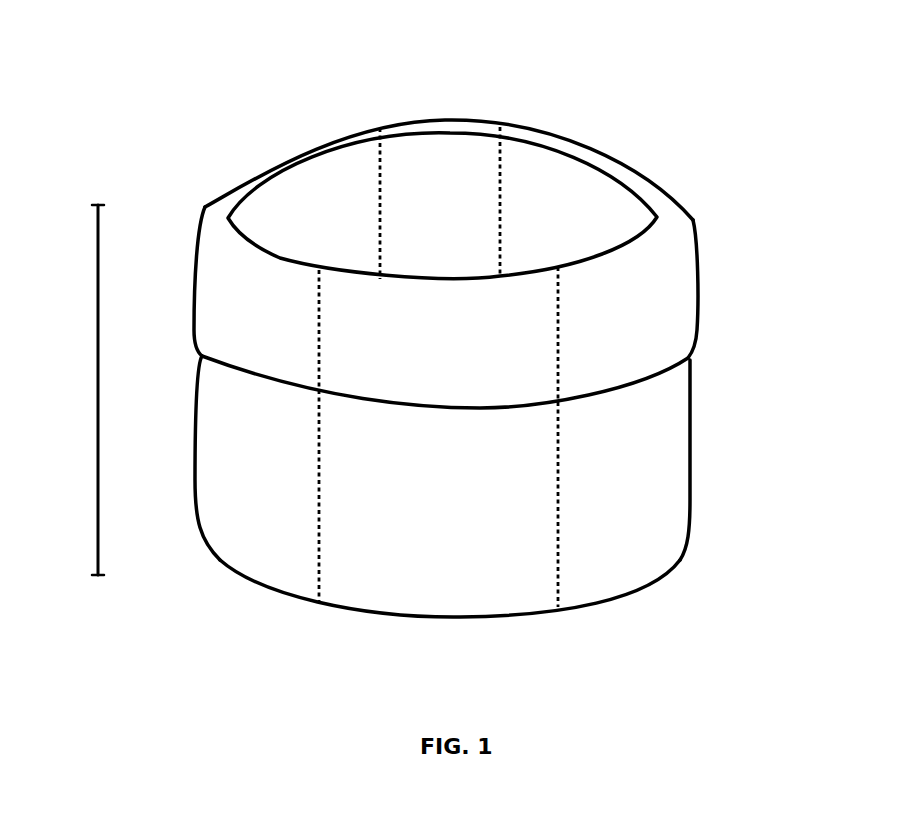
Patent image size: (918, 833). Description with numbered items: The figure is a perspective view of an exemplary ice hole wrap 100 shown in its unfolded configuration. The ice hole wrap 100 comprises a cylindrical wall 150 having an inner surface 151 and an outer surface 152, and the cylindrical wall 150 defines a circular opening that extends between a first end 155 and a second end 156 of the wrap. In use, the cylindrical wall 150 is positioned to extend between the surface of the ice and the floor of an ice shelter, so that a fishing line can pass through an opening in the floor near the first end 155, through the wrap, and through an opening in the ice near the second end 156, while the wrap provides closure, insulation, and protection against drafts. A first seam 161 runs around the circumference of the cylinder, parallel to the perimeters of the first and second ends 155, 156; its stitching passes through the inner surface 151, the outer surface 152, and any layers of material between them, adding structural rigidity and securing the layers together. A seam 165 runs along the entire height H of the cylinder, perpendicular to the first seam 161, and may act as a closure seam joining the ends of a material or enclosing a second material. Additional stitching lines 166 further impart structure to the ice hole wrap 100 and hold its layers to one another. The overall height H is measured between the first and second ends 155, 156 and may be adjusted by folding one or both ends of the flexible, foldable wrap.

The ice hole wrap 100 is at (250, 62).
The cylindrical wall 150 is at (454, 203).
The inner surface 151 is at (258, 223).
The outer surface 152 is at (499, 515).
The first end 155 is at (473, 120).
The second end 156 is at (545, 612).
The first seam 161 is at (470, 407).
The seam 165 is at (380, 238).
The additional stitching lines 166 is at (500, 260).
The height H is at (97, 373).